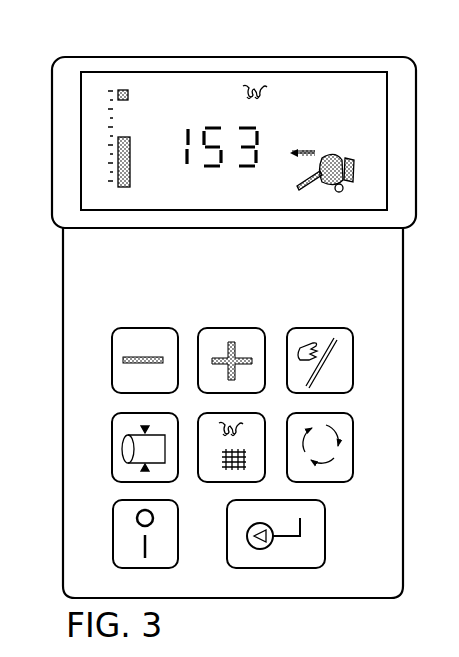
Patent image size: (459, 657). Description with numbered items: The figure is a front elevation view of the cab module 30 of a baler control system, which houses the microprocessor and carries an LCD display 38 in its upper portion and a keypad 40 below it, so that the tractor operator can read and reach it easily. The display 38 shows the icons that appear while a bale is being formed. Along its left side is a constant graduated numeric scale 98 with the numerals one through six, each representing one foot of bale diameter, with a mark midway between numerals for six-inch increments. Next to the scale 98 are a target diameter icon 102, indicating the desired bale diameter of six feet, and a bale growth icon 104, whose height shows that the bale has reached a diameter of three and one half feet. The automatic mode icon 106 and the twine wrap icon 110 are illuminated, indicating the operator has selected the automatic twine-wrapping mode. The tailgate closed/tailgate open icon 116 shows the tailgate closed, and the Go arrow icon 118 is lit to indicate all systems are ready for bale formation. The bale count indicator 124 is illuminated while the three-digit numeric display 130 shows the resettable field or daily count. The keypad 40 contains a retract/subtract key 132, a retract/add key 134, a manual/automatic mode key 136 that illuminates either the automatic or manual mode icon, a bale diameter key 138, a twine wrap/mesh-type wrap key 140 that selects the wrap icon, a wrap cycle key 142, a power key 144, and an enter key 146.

The cab module 30 is at (146, 26).
The LCD display 38 is at (176, 78).
The keypad 40 is at (284, 308).
The graduated numeric scale 98 is at (94, 136).
The target diameter icon 102 is at (120, 89).
The bale growth icon 104 is at (133, 172).
The automatic mode icon 106 is at (157, 85).
The twine wrap icon 110 is at (262, 82).
The tailgate closed/tailgate open icon 116 is at (365, 170).
The Go arrow icon 118 is at (293, 183).
The bale count indicator 124 is at (209, 196).
The 3-digit numeric display 130 is at (216, 126).
The retract/subtract key 132 is at (149, 327).
The retract/add key 134 is at (233, 327).
The manual/automatic mode key 136 is at (330, 327).
The bale diameter key 138 is at (128, 413).
The twine wrap/mesh-type wrap key 140 is at (230, 413).
The wrap cycle key 142 is at (345, 413).
The power key 144 is at (113, 520).
The enter key 146 is at (325, 530).